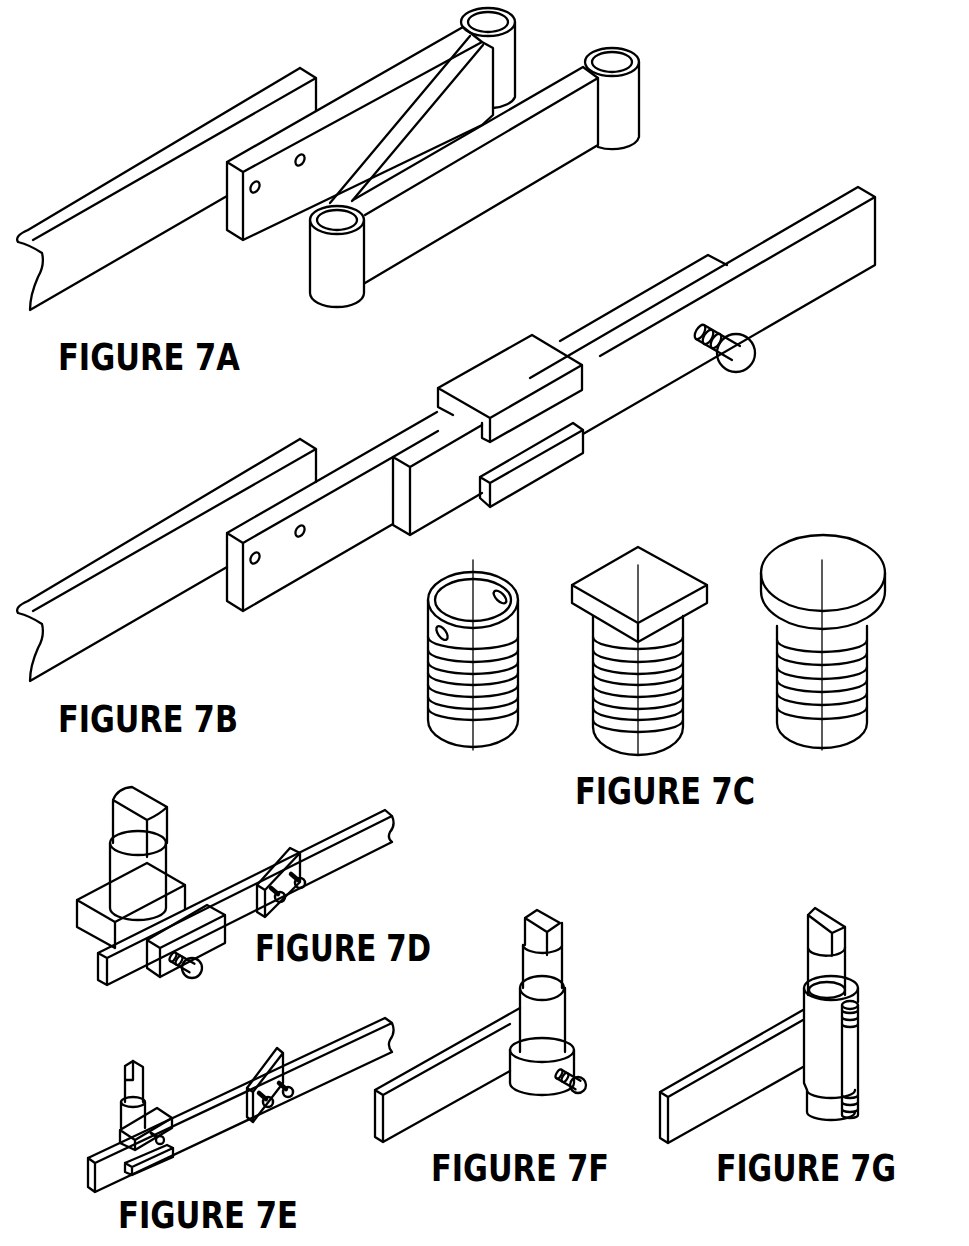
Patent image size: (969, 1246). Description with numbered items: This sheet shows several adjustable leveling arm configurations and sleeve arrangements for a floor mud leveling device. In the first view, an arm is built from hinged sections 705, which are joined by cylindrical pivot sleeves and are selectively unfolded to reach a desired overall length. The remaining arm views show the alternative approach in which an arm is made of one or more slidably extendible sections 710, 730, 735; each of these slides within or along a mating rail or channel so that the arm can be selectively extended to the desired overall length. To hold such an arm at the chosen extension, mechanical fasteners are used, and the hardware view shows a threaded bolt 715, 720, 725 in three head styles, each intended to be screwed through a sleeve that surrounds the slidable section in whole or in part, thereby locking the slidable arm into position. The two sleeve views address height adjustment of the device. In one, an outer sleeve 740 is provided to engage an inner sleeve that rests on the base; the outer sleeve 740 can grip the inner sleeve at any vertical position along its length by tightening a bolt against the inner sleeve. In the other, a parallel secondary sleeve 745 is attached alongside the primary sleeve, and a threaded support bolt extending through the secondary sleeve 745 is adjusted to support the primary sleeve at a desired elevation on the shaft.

In FIG. 7A, the hinged sections 705 is at (362, 133).
In FIG. 7B, the slidably extendible section 710 is at (806, 255).
In FIG. 7C, the threaded bolt 715 is at (517, 590).
In FIG. 7C, the threaded bolt 720 is at (665, 580).
In FIG. 7C, the threaded bolt 725 is at (856, 563).
In FIG. 7D, the slidably extendible section 730 is at (237, 897).
In FIG. 7E, the slidably extendible section 735 is at (200, 1117).
In FIG. 7F, the outer sleeve 740 is at (577, 1048).
In FIG. 7G, the secondary sleeve 745 is at (843, 1042).